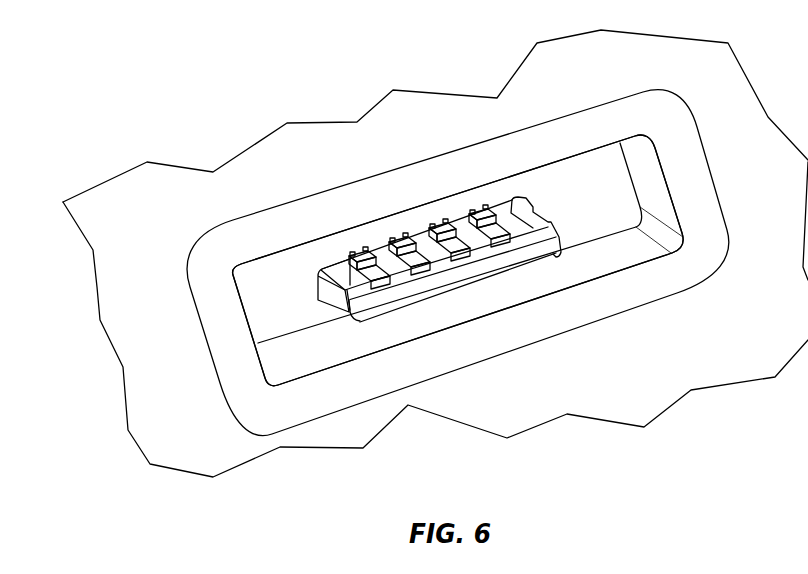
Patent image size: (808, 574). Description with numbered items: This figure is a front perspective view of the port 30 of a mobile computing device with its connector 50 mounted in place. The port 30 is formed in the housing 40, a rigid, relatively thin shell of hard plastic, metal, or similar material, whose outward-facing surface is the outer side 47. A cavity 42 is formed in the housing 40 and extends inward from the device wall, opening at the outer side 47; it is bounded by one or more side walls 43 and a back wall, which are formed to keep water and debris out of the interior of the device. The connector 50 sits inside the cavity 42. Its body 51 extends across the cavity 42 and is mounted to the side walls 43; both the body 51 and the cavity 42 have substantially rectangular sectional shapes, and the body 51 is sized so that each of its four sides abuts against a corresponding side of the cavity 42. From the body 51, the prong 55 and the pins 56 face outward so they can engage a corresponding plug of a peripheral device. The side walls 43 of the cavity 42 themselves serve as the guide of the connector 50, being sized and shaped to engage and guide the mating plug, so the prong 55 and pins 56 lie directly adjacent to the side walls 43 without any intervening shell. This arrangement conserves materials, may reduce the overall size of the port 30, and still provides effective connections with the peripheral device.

The port 30 is at (140, 118).
The housing 40 is at (227, 356).
The cavity 42 is at (601, 165).
The side walls 43 is at (658, 195).
The outer side 47 is at (220, 303).
The connector 50 is at (542, 249).
The body 51 is at (267, 312).
The prong 55 is at (375, 317).
The pins 56 is at (443, 250).